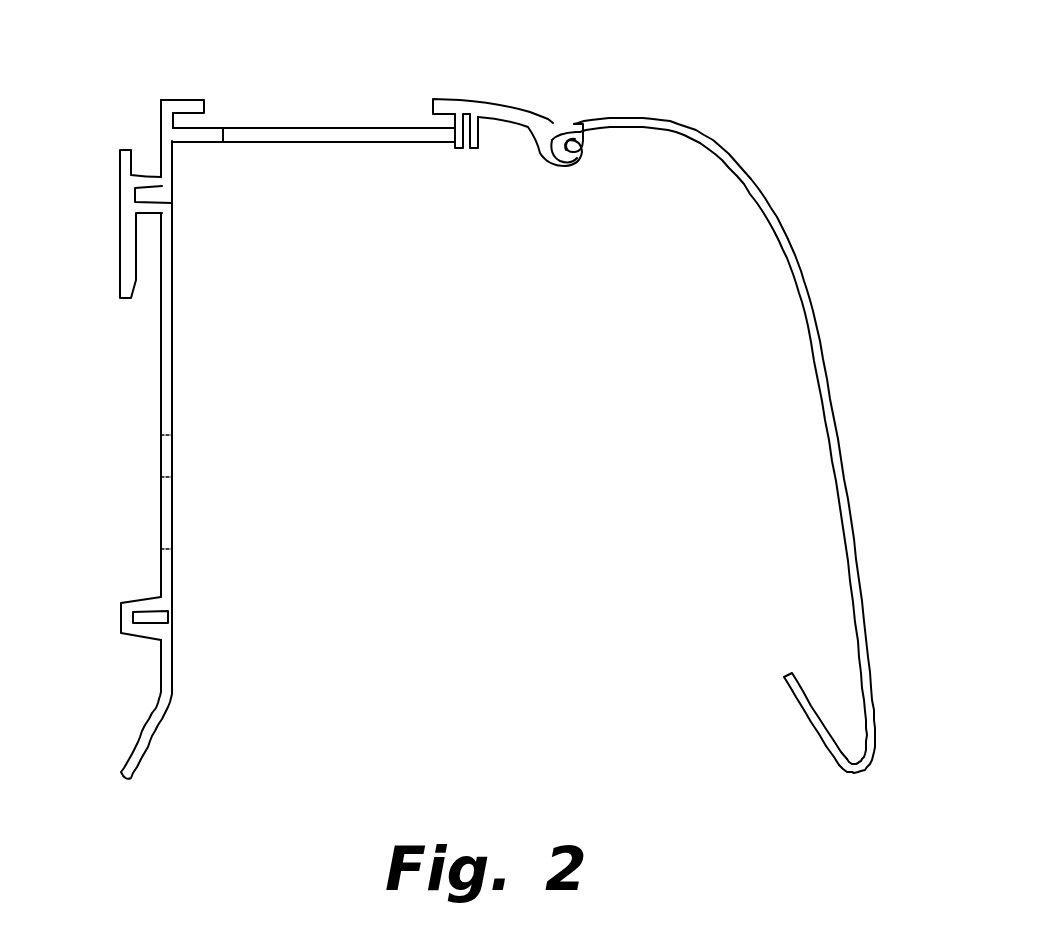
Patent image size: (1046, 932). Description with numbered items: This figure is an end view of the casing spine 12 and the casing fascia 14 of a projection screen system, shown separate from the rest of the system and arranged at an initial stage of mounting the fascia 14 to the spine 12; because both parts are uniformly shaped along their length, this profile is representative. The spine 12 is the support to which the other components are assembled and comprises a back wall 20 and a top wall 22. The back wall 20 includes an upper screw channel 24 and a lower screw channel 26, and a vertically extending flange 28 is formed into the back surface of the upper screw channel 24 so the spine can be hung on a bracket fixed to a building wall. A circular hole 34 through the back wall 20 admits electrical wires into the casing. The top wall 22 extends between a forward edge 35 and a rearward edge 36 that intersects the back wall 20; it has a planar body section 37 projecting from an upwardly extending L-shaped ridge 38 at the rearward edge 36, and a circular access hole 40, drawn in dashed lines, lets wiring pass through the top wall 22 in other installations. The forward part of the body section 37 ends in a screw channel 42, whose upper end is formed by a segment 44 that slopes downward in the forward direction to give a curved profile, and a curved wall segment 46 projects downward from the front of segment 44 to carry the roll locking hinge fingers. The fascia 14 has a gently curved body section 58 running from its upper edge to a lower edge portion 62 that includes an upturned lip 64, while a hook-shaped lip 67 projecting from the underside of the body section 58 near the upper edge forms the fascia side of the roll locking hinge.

The casing spine 12 is at (138, 95).
The casing fascia 14 is at (793, 155).
The back wall 20 is at (143, 396).
The top wall 22 is at (365, 92).
The upper screw channel 24 is at (165, 191).
The lower screw channel 26 is at (170, 618).
The flange 28 is at (124, 246).
The circular hole 34 is at (161, 497).
The forward edge 35 is at (582, 172).
The rearward edge 36 is at (161, 131).
The planar body section 37 is at (351, 142).
The L-shaped ridge 38 is at (190, 100).
The circular access hole 40 is at (261, 128).
The screw channel 42 is at (473, 150).
The top wall segment 44 is at (485, 100).
The curved wall segment 46 is at (535, 150).
The curved body section 58 is at (822, 361).
The lower edge portion 62 is at (867, 764).
The upturned lip 64 is at (810, 716).
The hook-shaped lip 67 is at (584, 138).